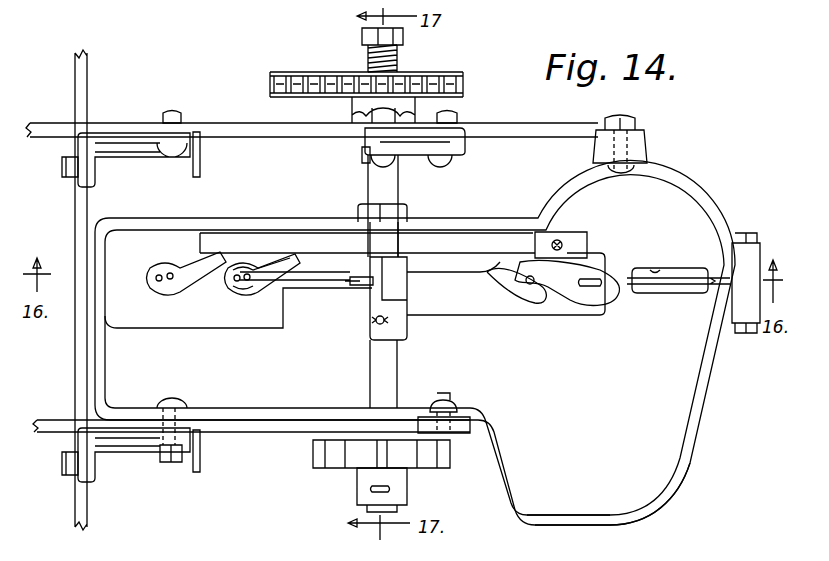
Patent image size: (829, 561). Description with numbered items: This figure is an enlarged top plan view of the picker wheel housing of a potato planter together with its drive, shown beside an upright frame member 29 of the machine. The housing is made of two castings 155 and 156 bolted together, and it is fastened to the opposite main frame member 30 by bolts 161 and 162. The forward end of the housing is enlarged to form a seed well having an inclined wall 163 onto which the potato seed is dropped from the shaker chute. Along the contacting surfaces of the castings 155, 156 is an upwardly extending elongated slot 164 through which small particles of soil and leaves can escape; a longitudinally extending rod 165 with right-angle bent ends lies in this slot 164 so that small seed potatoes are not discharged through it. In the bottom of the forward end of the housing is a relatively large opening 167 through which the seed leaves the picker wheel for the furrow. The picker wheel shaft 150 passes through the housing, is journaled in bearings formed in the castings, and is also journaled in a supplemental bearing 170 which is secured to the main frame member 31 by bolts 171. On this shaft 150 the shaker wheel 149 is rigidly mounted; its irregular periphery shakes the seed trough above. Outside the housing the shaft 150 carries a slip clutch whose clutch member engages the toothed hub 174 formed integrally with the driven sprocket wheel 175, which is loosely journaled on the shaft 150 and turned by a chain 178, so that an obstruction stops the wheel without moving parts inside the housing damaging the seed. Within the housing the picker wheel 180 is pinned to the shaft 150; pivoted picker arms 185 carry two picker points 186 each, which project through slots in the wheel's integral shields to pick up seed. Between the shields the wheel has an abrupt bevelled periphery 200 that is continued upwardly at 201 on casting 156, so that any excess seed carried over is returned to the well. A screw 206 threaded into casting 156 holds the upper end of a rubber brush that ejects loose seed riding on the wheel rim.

The vertical post 29 is at (75, 496).
The main frame member 30 is at (48, 420).
The main frame member 31 is at (45, 127).
The shaker wheel 149 is at (318, 458).
The picker wheel shaft 150 is at (370, 360).
The housing casting 155 is at (625, 526).
The housing casting 156 is at (283, 223).
The bolt 161 is at (171, 405).
The bolt 162 is at (612, 178).
The inclined wall 163 is at (655, 460).
The elongated slot 164 is at (660, 268).
The rod 165 is at (668, 294).
The opening 167 is at (222, 330).
The supplemental bearing 170 is at (362, 158).
The bolt 171 is at (393, 168).
The hub 174 is at (355, 106).
The driven sprocket wheel 175 is at (408, 78).
The chain 178 is at (296, 76).
The picker wheel 180 is at (458, 271).
The picker arm 185 is at (160, 270).
The picker point 186 is at (527, 282).
The bevelled periphery 200 is at (323, 267).
The bevelled continuation 201 is at (437, 240).
The screw 206 is at (557, 240).